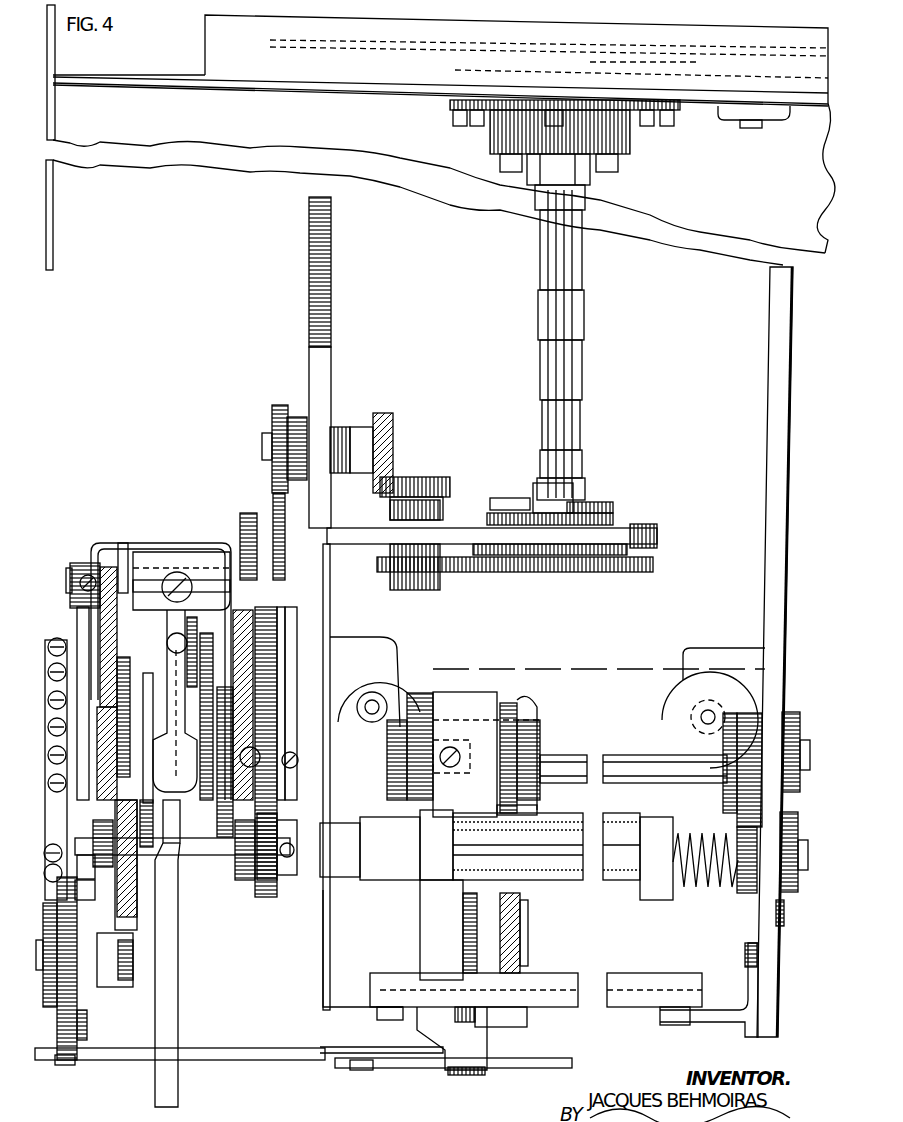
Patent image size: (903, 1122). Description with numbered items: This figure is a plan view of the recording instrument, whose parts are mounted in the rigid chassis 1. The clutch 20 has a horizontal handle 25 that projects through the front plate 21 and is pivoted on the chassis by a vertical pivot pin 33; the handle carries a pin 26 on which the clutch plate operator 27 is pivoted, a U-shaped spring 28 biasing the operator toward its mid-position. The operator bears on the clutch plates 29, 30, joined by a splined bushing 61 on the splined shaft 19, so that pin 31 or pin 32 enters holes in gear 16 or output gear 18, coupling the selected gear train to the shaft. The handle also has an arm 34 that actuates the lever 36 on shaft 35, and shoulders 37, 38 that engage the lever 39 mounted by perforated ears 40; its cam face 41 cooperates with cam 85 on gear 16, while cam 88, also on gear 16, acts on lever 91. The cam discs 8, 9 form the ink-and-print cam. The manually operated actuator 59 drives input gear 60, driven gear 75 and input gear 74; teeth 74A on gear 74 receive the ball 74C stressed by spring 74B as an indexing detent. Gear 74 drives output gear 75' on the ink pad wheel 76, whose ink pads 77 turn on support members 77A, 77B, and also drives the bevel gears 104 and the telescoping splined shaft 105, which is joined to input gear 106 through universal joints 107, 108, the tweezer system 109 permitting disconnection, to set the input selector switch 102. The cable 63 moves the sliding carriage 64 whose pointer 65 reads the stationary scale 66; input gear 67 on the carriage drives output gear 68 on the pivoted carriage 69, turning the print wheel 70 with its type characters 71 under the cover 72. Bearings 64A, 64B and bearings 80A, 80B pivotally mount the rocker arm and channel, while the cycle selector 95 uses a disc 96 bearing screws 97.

The chassis 1 is at (308, 356).
The cam disc 8 is at (244, 512).
The cam disc 9 is at (260, 512).
The gear 16 is at (124, 657).
The output gear 18 is at (230, 835).
The splined shaft 19 is at (606, 757).
The clutch 20 is at (200, 971).
The front plate 21 is at (233, 1062).
The handle 25 is at (172, 1010).
The pin 26 is at (170, 640).
The clutch plate operator 27 is at (185, 855).
The U-shaped spring 28 is at (170, 665).
The clutch plate 29 is at (155, 845).
The clutch plate 30 is at (210, 855).
The pin 31 is at (146, 675).
The pin 32 is at (190, 635).
The vertical pivot pin 33 is at (176, 576).
The arm 34 is at (322, 568).
The shaft 35 is at (66, 580).
The lever 36 is at (296, 681).
The shoulder 37 is at (147, 552).
The shoulder 38 is at (214, 555).
The lever 39 is at (172, 528).
The perforated ears 40 is at (122, 552).
The cam face 41 is at (80, 622).
The manually operated actuator 59 is at (66, 1062).
The input gear 60 is at (82, 1012).
The splined bushing 61 is at (153, 800).
The cable 63 is at (625, 669).
The sliding carriage 64 is at (464, 705).
The bearing 64A is at (392, 785).
The bearing 64B is at (540, 745).
The pointer 65 is at (466, 1076).
The stationary scale 66 is at (422, 1066).
The input gear 67 is at (510, 705).
The output gear 68 is at (518, 925).
The pivoted carriage 69 is at (528, 945).
The print wheel 70 is at (470, 1022).
The type characters 71 is at (463, 918).
The cover 72 is at (510, 1027).
The input gear 74 is at (275, 640).
The teeth 74A is at (280, 660).
The spring 74B is at (262, 752).
The ball 74C is at (296, 760).
The driven gear 75 is at (536, 802).
The output gear 75' is at (266, 870).
The ink pad wheel 76 is at (655, 900).
The ink pads 77 is at (575, 890).
The support member 77A is at (328, 903).
The support member 77B is at (740, 893).
The bearing 80A is at (390, 694).
The bearing 80B is at (740, 700).
The cam 85 is at (84, 870).
The cam 88 is at (84, 895).
The lever 91 is at (72, 604).
The cycle selector 95 is at (52, 880).
The disc 96 is at (57, 648).
The screws 97 is at (55, 887).
The input selector switch 102 is at (427, 58).
The bevel gears 104 is at (393, 448).
The telescoping splined shaft 105 is at (536, 300).
The input gear 106 is at (600, 510).
The universal joint 107 is at (588, 174).
The universal joint 108 is at (565, 488).
The tweezer system 109 is at (495, 497).